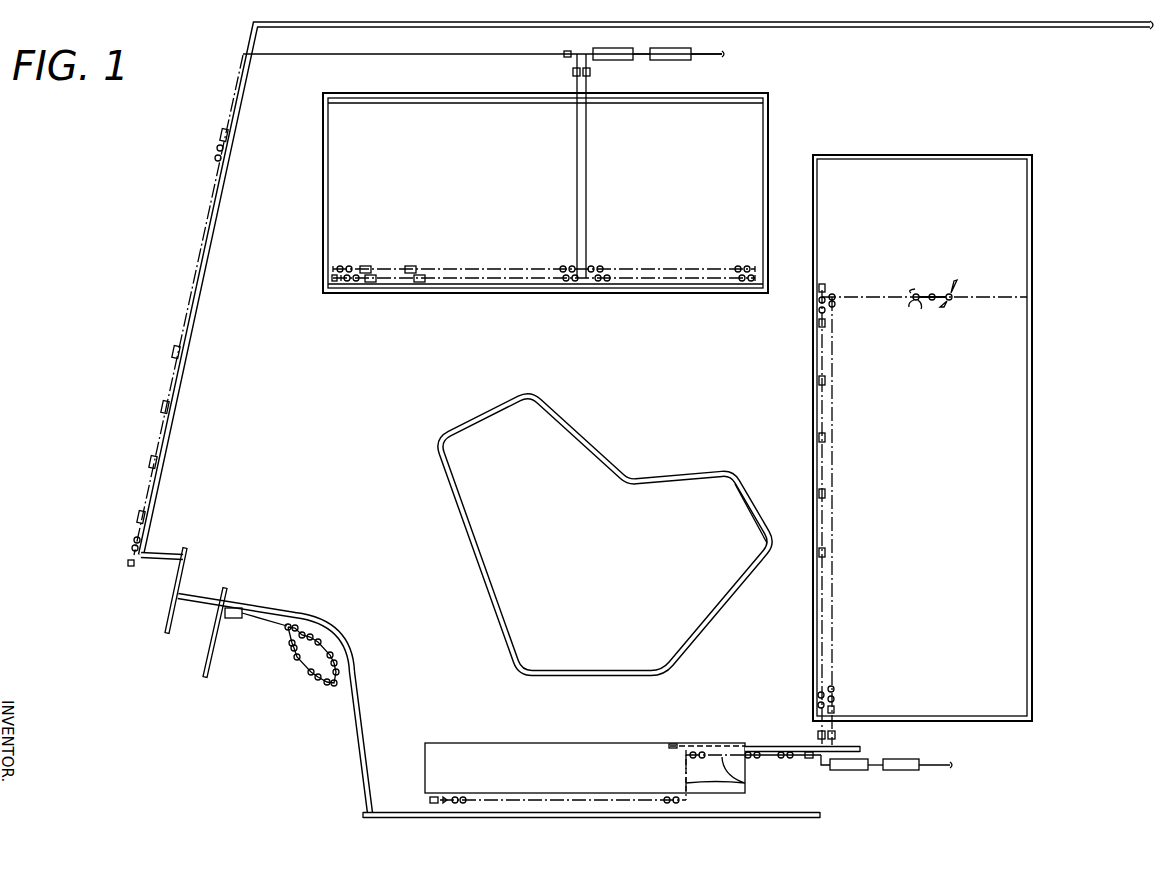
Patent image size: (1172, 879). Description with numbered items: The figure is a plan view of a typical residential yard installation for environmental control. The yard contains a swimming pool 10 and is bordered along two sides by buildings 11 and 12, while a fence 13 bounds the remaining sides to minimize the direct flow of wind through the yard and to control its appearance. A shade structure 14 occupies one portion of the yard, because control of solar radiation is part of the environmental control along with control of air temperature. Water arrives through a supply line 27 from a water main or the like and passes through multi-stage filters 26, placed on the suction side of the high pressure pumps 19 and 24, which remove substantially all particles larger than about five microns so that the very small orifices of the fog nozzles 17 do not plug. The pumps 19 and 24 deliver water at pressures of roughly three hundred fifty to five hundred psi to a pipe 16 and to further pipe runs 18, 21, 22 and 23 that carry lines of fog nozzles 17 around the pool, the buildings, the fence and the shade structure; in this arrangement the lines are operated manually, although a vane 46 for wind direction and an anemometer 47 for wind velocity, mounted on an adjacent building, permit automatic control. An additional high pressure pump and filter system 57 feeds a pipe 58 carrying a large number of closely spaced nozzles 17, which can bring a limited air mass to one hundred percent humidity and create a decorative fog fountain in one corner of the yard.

The swimming pool 10 is at (594, 446).
The building 11 is at (770, 140).
The building 12 is at (1032, 236).
The fence 13 is at (173, 428).
The shade structure 14 is at (470, 744).
The pipe 16 is at (425, 270).
The fog nozzle 17 is at (593, 271).
The feed pipe 18 is at (586, 166).
The pump 19 is at (613, 61).
The return line 21 is at (207, 207).
The distribution pipes 22 is at (822, 515).
The drain connection 23 is at (745, 783).
The pump 24 is at (849, 771).
The filter 26 is at (670, 61).
The water main supply line 27 is at (722, 57).
The vane 46 is at (950, 302).
The anemometer 47 is at (911, 294).
The high pressure pump and filter system 57 is at (237, 620).
The pipe 58 is at (300, 667).